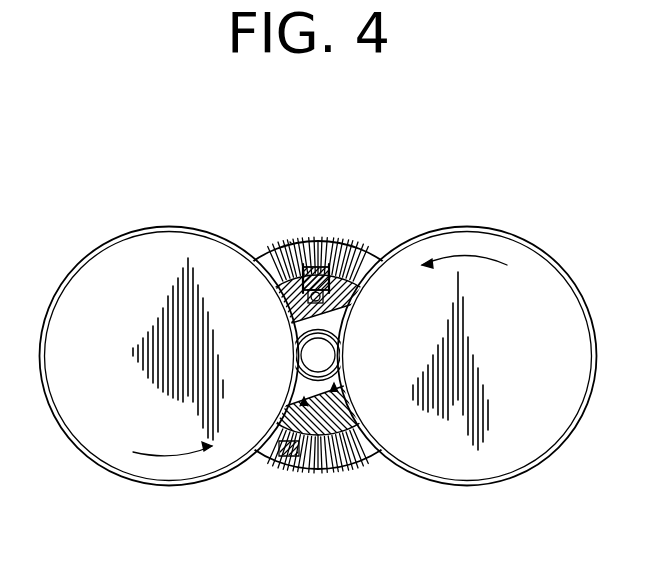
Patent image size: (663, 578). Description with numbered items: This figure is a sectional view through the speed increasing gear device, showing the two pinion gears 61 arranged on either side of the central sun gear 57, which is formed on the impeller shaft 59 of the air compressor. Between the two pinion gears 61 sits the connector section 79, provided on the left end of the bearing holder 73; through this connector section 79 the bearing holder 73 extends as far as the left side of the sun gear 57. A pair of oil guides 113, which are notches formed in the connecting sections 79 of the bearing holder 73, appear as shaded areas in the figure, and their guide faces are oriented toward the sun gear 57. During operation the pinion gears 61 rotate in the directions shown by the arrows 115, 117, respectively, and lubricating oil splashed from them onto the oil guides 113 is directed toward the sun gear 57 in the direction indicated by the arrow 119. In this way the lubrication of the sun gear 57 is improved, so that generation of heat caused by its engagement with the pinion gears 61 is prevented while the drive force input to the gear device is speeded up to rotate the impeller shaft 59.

The pinion gears 61 is at (125, 340).
The bearing holder 73 is at (306, 324).
The connector section 79 is at (285, 250).
The oil guides 113 is at (340, 264).
The arrow 119 is at (283, 407).
The sun gear 57 is at (345, 346).
The impeller shaft 59 is at (330, 358).
The arrow 115 is at (163, 452).
The arrow 117 is at (482, 262).